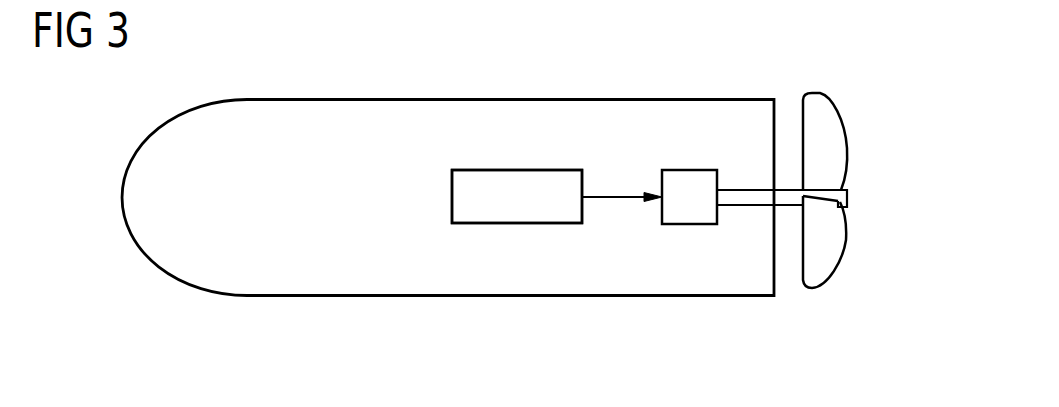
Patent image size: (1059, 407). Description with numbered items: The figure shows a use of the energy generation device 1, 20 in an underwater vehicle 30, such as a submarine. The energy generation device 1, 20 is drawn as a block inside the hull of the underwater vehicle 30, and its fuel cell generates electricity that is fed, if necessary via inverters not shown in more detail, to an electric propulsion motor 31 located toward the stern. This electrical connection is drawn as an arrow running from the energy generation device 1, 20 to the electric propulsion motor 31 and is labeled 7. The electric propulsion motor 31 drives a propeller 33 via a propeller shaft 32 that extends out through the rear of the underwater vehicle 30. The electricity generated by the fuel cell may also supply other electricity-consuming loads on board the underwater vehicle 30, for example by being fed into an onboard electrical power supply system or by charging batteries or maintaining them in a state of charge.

The underwater vehicle 30 is at (480, 99).
The energy generation device 1 is at (515, 170).
The energy generation device 20 is at (517, 196).
The electrical connection line 7 is at (620, 197).
The electric propulsion motor 31 is at (688, 170).
The propeller shaft 32 is at (750, 190).
The propeller 33 is at (812, 93).